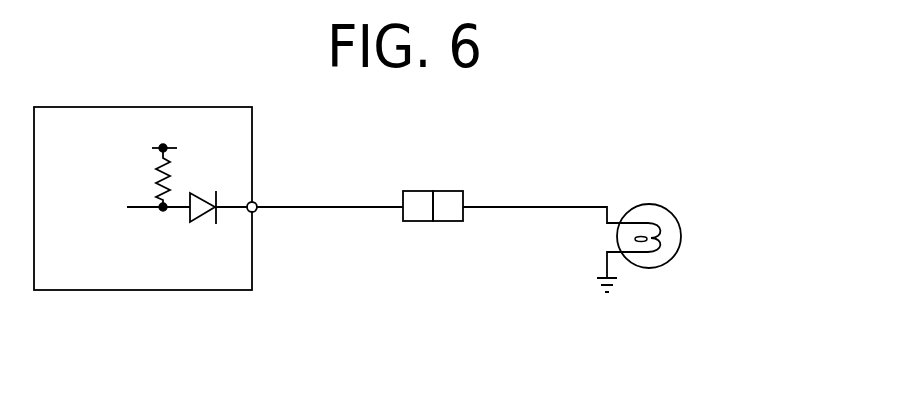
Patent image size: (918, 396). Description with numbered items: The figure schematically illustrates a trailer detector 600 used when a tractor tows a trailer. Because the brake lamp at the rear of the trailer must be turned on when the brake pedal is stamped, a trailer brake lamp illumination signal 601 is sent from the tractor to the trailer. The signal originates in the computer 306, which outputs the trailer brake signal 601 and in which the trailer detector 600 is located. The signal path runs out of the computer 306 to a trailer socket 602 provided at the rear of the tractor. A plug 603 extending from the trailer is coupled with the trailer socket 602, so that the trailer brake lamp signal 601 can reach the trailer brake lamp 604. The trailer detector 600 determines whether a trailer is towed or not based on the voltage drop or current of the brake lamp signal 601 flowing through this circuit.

The computer 306 is at (187, 290).
The trailer detector 600 is at (273, 186).
The trailer brake lamp illumination signal 601 is at (138, 211).
The trailer socket 602 is at (415, 222).
The plug 603 is at (467, 222).
The trailer brake lamp 604 is at (712, 204).